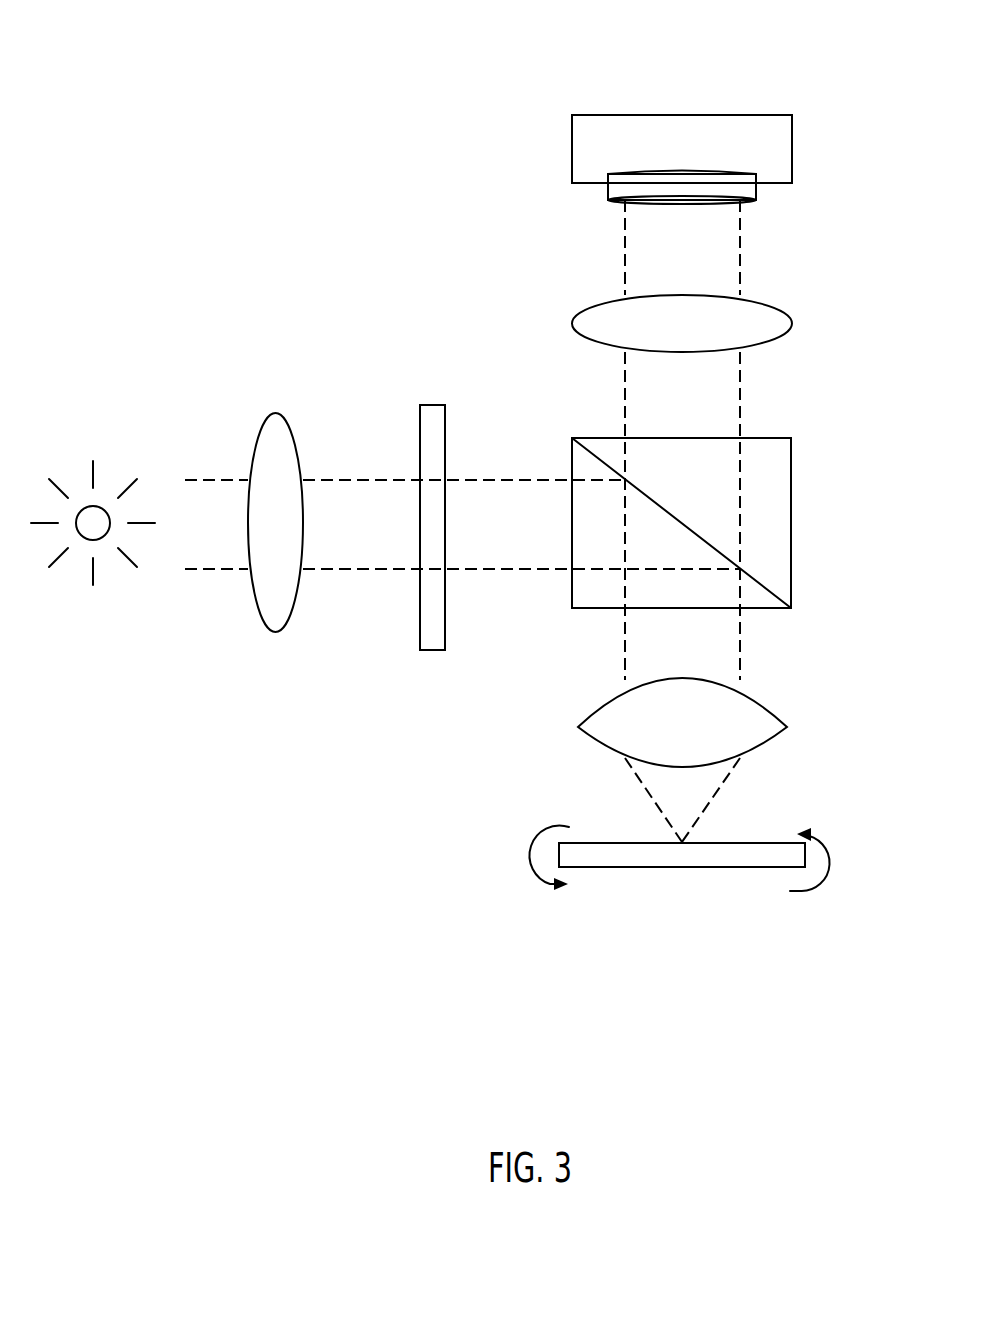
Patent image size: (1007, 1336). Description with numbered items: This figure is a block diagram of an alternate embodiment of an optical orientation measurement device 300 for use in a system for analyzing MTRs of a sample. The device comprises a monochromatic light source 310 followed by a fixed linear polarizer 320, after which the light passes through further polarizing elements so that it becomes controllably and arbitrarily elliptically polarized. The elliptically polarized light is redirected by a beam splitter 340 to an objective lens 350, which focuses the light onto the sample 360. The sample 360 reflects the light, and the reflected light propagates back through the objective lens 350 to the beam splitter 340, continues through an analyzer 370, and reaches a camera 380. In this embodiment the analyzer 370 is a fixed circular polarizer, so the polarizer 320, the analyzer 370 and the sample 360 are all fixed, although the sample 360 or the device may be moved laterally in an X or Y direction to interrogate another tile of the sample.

The orientation measurement device 300 is at (249, 95).
The monochromatic light source 310 is at (121, 600).
The fixed linear polarizer 320 is at (293, 608).
The beam splitter 340 is at (792, 470).
The objective lens 350 is at (783, 710).
The sample 360 is at (758, 866).
The analyzer 370 is at (792, 320).
The camera 380 is at (792, 132).